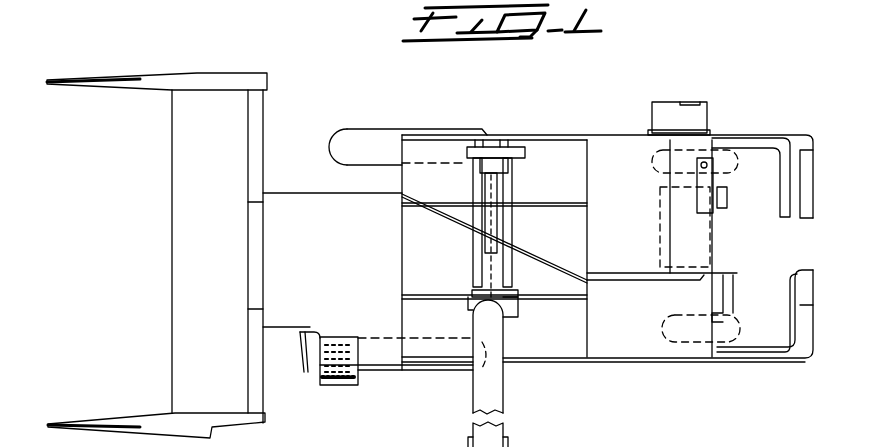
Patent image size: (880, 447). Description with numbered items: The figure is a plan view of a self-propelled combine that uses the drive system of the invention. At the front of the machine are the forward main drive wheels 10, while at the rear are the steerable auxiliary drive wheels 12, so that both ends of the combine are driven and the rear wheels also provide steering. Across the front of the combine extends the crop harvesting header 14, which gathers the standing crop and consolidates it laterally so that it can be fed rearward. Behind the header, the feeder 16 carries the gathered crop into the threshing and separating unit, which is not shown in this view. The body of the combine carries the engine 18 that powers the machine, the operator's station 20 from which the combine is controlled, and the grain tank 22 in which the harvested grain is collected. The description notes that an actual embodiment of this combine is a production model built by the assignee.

The forward main drive wheels 10 is at (371, 141).
The rear steerable auxiliary drive wheels 12 is at (688, 152).
The crop harvesting header 14 is at (186, 205).
The feeder 16 is at (248, 280).
The engine 18 is at (693, 232).
The operator's station 20 is at (313, 208).
The grain tank 22 is at (548, 158).